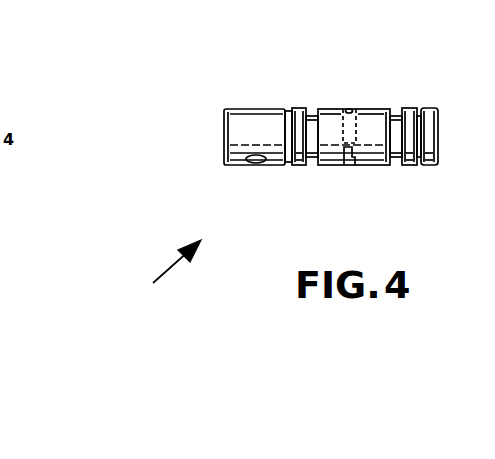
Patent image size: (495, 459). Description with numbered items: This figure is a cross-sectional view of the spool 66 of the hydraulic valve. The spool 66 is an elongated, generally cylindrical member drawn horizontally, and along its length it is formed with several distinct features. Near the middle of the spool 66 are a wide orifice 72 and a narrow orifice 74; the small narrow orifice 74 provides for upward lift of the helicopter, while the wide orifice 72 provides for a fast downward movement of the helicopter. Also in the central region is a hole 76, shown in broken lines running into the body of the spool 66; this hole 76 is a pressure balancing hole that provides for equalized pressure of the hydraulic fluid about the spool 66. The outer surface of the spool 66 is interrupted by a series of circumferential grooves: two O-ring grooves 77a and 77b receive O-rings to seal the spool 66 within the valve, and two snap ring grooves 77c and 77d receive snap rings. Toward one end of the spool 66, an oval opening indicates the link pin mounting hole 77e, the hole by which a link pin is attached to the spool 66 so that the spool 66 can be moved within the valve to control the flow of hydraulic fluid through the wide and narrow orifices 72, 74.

The spool 66 is at (164, 271).
The wide orifice 72 is at (354, 163).
The narrow orifice 74 is at (344, 148).
The hole 76 is at (350, 107).
The O-ring groove 77a is at (312, 108).
The O-ring groove 77b is at (400, 108).
The snap ring groove 77c is at (288, 108).
The snap ring groove 77d is at (420, 165).
The link pin mounting hole 77e is at (256, 159).